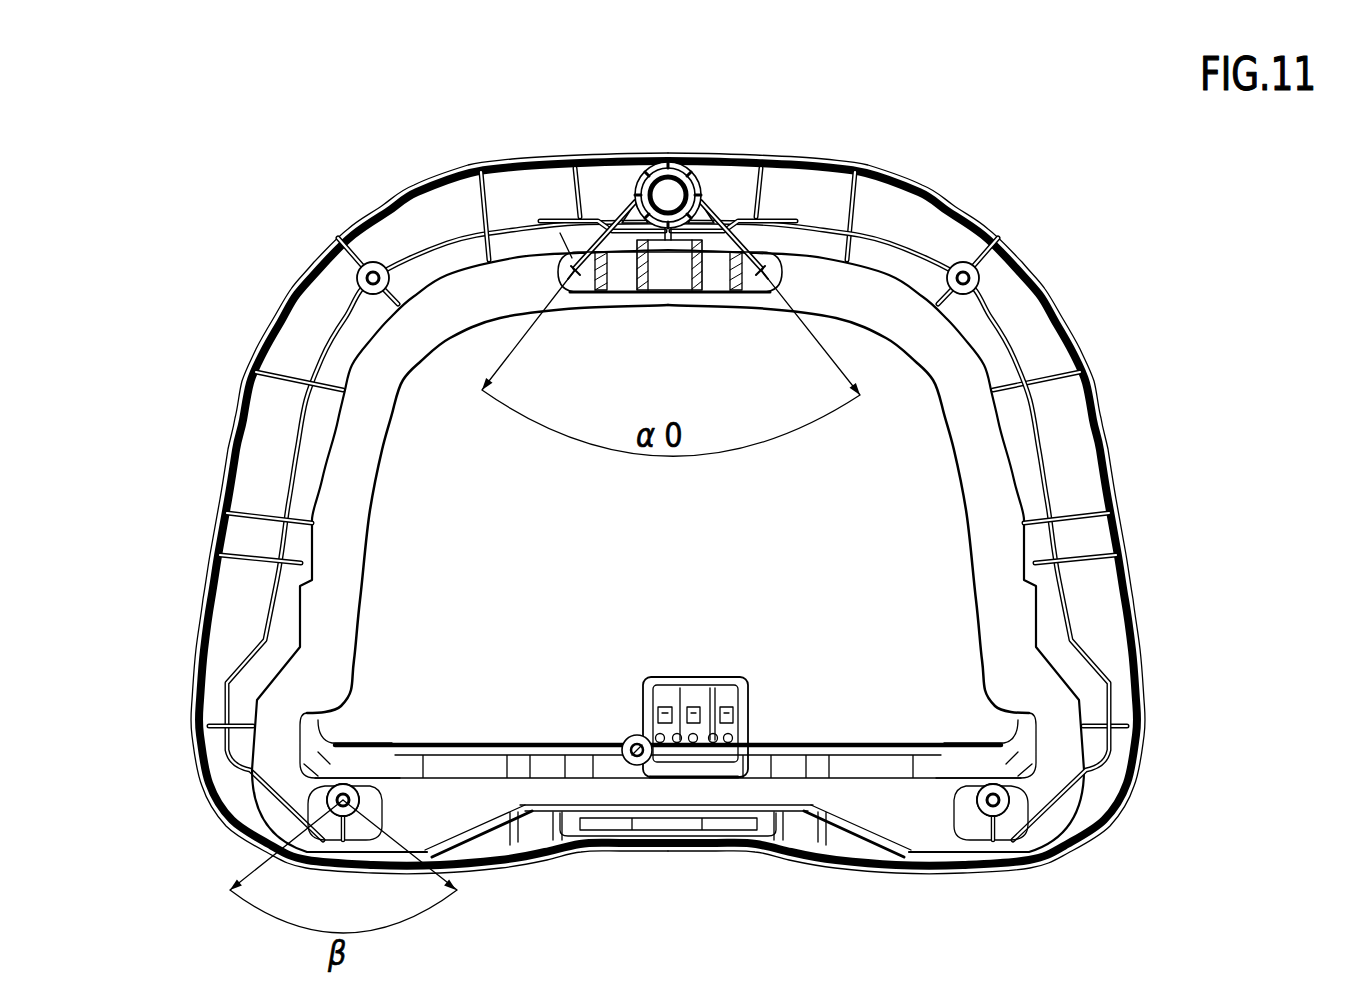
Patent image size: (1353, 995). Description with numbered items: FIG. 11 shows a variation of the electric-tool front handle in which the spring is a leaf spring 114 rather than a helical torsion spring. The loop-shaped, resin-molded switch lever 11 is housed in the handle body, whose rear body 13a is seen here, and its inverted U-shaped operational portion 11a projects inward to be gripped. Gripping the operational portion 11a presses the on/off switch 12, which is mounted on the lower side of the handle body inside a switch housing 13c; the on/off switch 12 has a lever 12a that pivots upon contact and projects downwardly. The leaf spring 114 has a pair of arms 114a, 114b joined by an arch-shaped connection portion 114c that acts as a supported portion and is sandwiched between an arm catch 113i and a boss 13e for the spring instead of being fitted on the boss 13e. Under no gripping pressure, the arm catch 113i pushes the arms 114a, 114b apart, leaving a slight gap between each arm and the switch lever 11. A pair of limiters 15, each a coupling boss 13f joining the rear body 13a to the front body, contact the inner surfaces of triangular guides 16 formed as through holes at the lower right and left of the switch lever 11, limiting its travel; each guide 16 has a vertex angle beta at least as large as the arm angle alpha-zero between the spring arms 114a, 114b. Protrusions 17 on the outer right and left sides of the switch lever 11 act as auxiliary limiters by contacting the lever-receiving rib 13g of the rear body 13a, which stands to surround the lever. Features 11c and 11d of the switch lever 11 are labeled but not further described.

The switch lever 11 is at (487, 300).
The operational portion 11a is at (368, 548).
The upper frame portion 11c is at (572, 262).
The hook portion 11d is at (573, 275).
The on/off switch 12 is at (690, 720).
The lever 12a is at (628, 740).
The rear body 13a is at (890, 172).
The switch housing 13c is at (725, 678).
The boss for a spring 13e is at (684, 166).
The coupling boss 13f is at (373, 262).
The lever-receiving rib 13g is at (1045, 440).
The limiter 15 is at (337, 812).
The guide 16 is at (338, 818).
The protrusion 17 is at (300, 540).
The arm catch 113i is at (628, 294).
The leaf spring 114 is at (668, 221).
The arm 114a is at (597, 202).
The arm 114b is at (748, 235).
The connection portion 114c is at (682, 292).